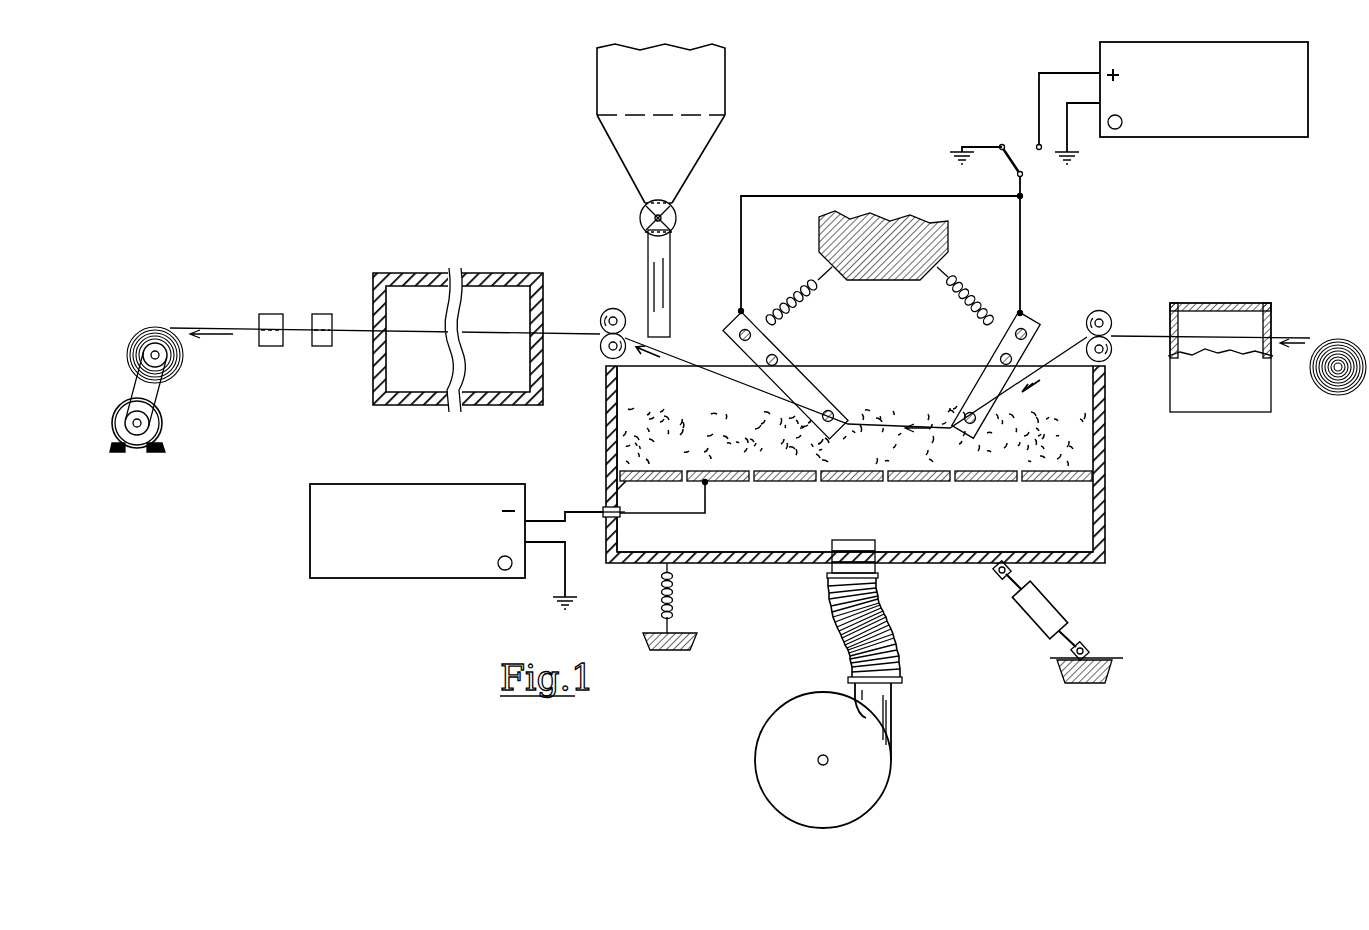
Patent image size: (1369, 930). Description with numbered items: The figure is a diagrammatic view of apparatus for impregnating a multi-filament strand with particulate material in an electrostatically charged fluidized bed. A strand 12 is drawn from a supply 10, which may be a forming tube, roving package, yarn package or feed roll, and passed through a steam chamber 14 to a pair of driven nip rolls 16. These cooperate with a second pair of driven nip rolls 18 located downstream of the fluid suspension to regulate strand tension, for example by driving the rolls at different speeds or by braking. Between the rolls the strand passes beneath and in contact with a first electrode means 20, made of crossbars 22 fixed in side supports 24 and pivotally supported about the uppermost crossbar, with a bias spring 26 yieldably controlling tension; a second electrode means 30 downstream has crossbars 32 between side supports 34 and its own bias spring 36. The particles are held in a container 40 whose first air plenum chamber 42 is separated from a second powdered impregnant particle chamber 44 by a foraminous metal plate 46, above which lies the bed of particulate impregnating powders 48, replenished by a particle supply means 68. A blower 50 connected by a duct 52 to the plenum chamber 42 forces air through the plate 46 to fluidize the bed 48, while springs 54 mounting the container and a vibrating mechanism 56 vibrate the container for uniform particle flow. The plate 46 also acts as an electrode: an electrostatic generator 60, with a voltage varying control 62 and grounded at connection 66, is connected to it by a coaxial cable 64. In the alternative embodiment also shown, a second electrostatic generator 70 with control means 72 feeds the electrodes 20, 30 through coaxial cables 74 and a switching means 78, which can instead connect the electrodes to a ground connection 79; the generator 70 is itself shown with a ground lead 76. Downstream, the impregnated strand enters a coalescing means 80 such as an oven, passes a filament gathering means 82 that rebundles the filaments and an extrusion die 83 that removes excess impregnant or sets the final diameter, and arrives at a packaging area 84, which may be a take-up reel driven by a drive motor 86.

The supply of multi-filament strand 10 is at (1334, 394).
The strand 12 is at (220, 322).
The steam chamber 14 is at (1242, 303).
The driven nip rolls 16 is at (1112, 312).
The driven nip rolls 18 is at (624, 308).
The first electrode means 20 is at (1060, 296).
The crossbars 22 is at (1014, 336).
The side supports 24 is at (1000, 358).
The bias spring 26 is at (964, 280).
The second electrode means 30 is at (734, 316).
The crossbars 32 is at (752, 334).
The side supports 34 is at (778, 356).
The bias spring 36 is at (808, 280).
The container 40 is at (1114, 507).
The first air plenum chamber 42 is at (1035, 535).
The second powdered impregnant particle chamber 44 is at (657, 393).
The foraminous metal plate 46 is at (795, 482).
The bed of particulate impregnating powders 48 is at (667, 440).
The blower 50 is at (790, 712).
The duct 52 is at (842, 636).
The springs 54 is at (676, 602).
The vibrating mechanism 56 is at (1022, 616).
The electrostatic generator 60 is at (420, 484).
The voltage varying control 62 is at (498, 567).
The coaxial cable 64 is at (580, 512).
The ground connection 66 is at (560, 598).
The particle supply means 68 is at (727, 108).
The electrostatic generator 70 is at (1228, 42).
The control means 72 is at (1122, 127).
The coaxial cables 74 is at (1039, 82).
The ground lead 76 is at (1075, 155).
The switching means 78 is at (1018, 118).
The ground connection 79 is at (958, 152).
The coalescing means 80 is at (498, 263).
The filament gathering means 82 is at (330, 314).
The extrusion die 83 is at (272, 314).
The packaging area 84 is at (137, 311).
The drive motor 86 is at (160, 426).